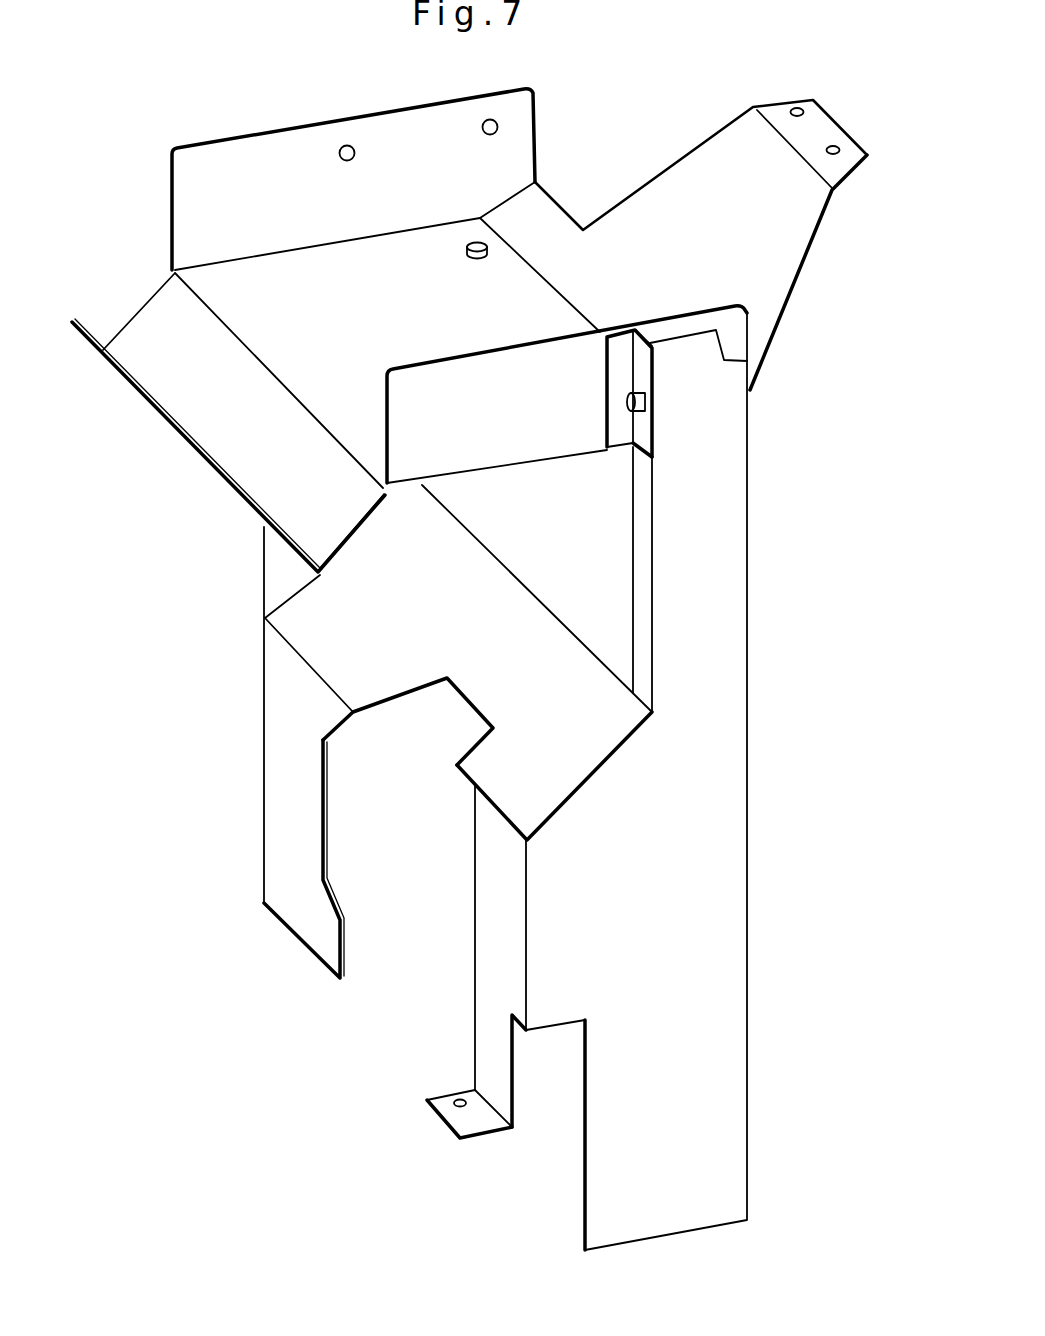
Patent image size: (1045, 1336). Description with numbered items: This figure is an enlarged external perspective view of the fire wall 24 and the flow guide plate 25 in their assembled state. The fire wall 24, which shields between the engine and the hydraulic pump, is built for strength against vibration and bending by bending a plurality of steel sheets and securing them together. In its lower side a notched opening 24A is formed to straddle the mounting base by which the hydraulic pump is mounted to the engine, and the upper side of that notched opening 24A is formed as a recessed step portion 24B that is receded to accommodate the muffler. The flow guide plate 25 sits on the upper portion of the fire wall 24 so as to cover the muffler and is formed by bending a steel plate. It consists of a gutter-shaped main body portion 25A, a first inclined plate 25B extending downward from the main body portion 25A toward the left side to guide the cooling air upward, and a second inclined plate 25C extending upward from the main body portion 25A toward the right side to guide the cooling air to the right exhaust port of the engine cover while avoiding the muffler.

The fire wall 24 is at (695, 777).
The notched opening 24A is at (343, 723).
The recessed step portion 24B is at (570, 570).
The flow guide plate 25 is at (298, 187).
The gutter-shaped main body portion 25A is at (405, 268).
The first inclined plate 25B is at (212, 402).
The second inclined plate 25C is at (697, 187).